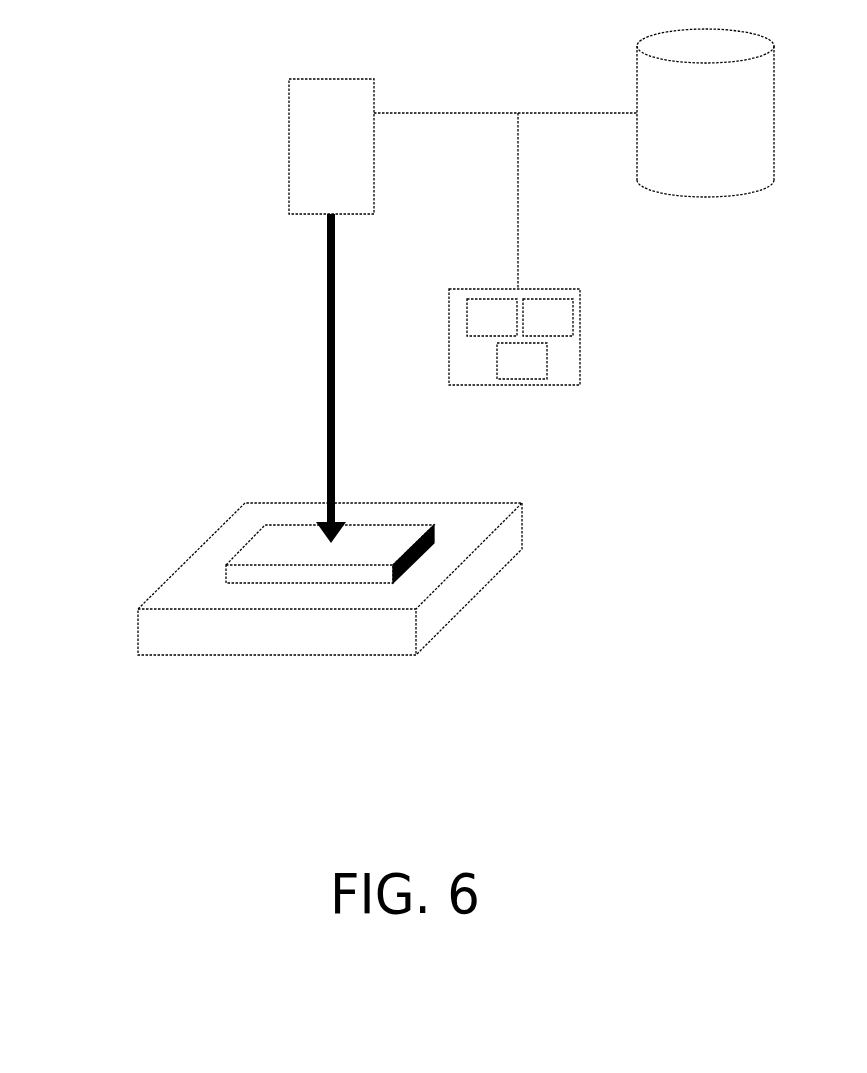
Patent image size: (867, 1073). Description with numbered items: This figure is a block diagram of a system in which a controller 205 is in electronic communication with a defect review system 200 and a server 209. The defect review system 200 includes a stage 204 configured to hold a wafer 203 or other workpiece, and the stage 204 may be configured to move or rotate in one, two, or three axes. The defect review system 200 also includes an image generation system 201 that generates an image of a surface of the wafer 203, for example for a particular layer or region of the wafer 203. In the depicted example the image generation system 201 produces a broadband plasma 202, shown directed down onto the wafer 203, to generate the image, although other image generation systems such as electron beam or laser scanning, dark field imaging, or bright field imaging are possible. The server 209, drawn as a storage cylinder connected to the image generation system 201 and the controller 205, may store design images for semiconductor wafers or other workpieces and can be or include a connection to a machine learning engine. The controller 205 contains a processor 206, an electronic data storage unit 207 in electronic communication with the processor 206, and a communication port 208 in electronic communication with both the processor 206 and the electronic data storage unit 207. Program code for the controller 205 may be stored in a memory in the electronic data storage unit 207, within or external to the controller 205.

The defect review system 200 is at (238, 110).
The image generation system 201 is at (331, 146).
The broadband plasma 202 is at (334, 270).
The wafer 203 is at (264, 547).
The stage 204 is at (198, 650).
The controller 205 is at (544, 310).
The processor 206 is at (492, 317).
The electronic data storage unit 207 is at (548, 317).
The communication port 208 is at (522, 361).
The server 209 is at (705, 113).